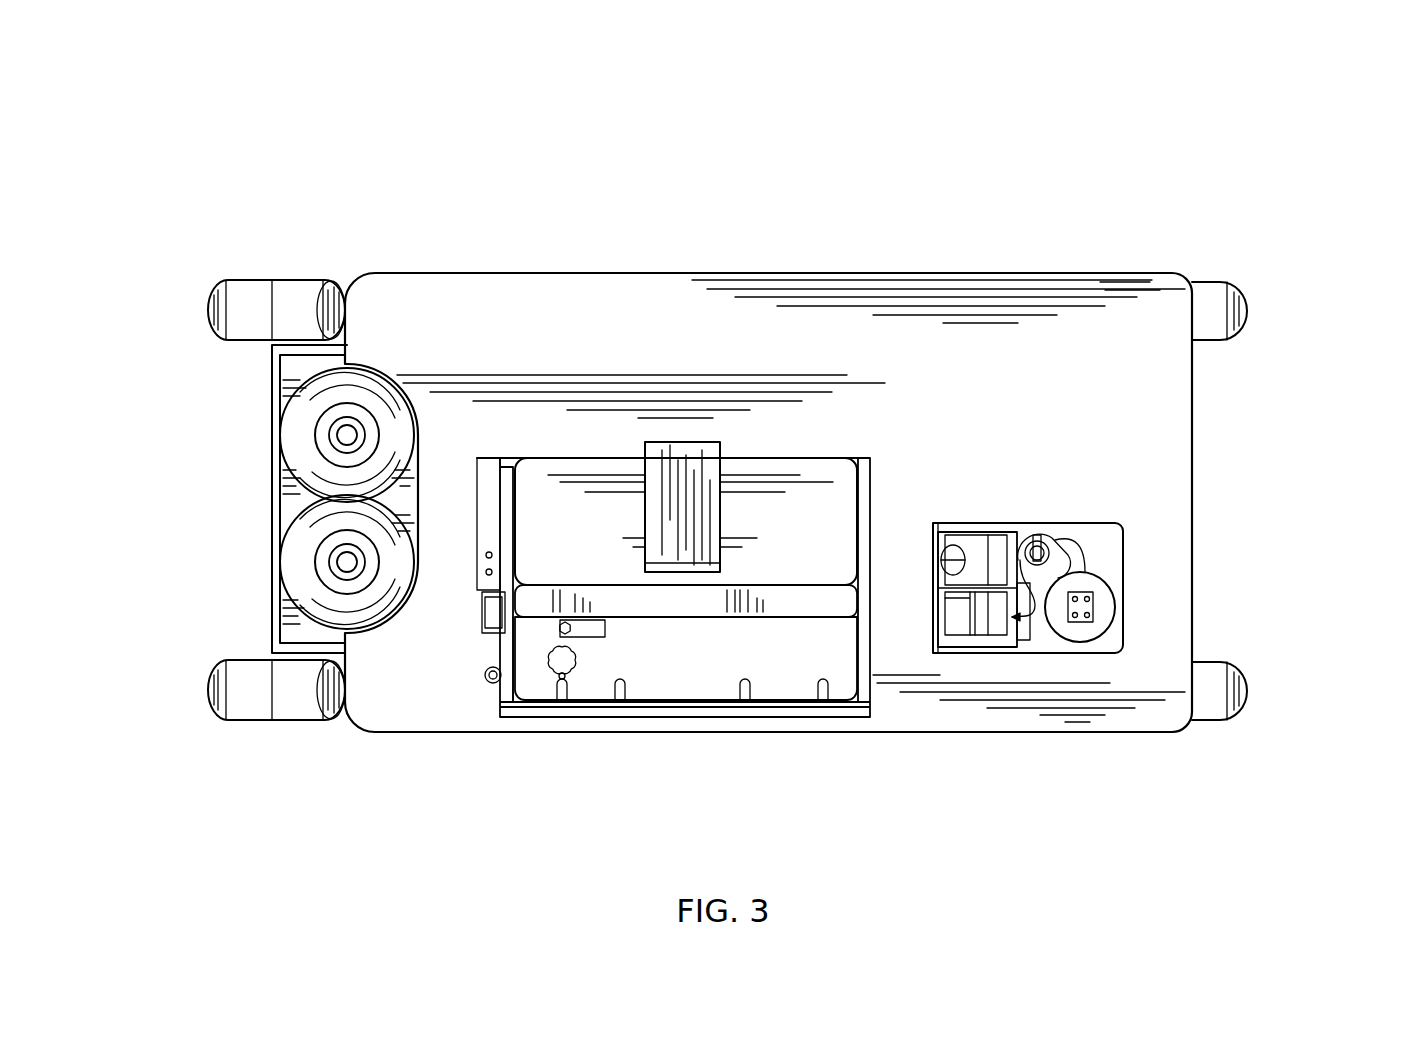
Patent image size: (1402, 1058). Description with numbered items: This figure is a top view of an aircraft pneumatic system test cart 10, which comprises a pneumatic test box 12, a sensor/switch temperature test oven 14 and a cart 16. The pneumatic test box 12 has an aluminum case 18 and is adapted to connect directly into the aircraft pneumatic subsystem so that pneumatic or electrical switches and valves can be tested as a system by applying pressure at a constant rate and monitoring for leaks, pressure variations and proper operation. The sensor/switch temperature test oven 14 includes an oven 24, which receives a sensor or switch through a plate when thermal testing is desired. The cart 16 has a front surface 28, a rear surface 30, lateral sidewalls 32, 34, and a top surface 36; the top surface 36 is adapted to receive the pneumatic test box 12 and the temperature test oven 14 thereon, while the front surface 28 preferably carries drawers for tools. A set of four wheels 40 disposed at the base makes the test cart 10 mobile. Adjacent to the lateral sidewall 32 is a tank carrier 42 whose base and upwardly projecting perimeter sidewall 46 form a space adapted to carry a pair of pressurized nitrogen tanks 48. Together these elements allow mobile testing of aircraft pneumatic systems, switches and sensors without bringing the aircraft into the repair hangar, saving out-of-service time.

The aircraft pneumatic system test cart 10 is at (743, 449).
The pneumatic test box 12 is at (440, 750).
The sensor/switch temperature test oven 14 is at (565, 467).
The cart 16 is at (1243, 462).
The aluminum case 18 is at (667, 706).
The oven 24 is at (1060, 642).
The front surface 28 is at (925, 733).
The rear surface 30 is at (733, 272).
The lateral sidewall 32 is at (347, 347).
The lateral sidewall 34 is at (1192, 533).
The top surface 36 is at (1115, 305).
The wheels 40 is at (222, 310).
The tank carrier 42 is at (265, 438).
The perimeter sidewall 46 is at (272, 542).
The pressurized nitrogen tanks 48 is at (317, 523).